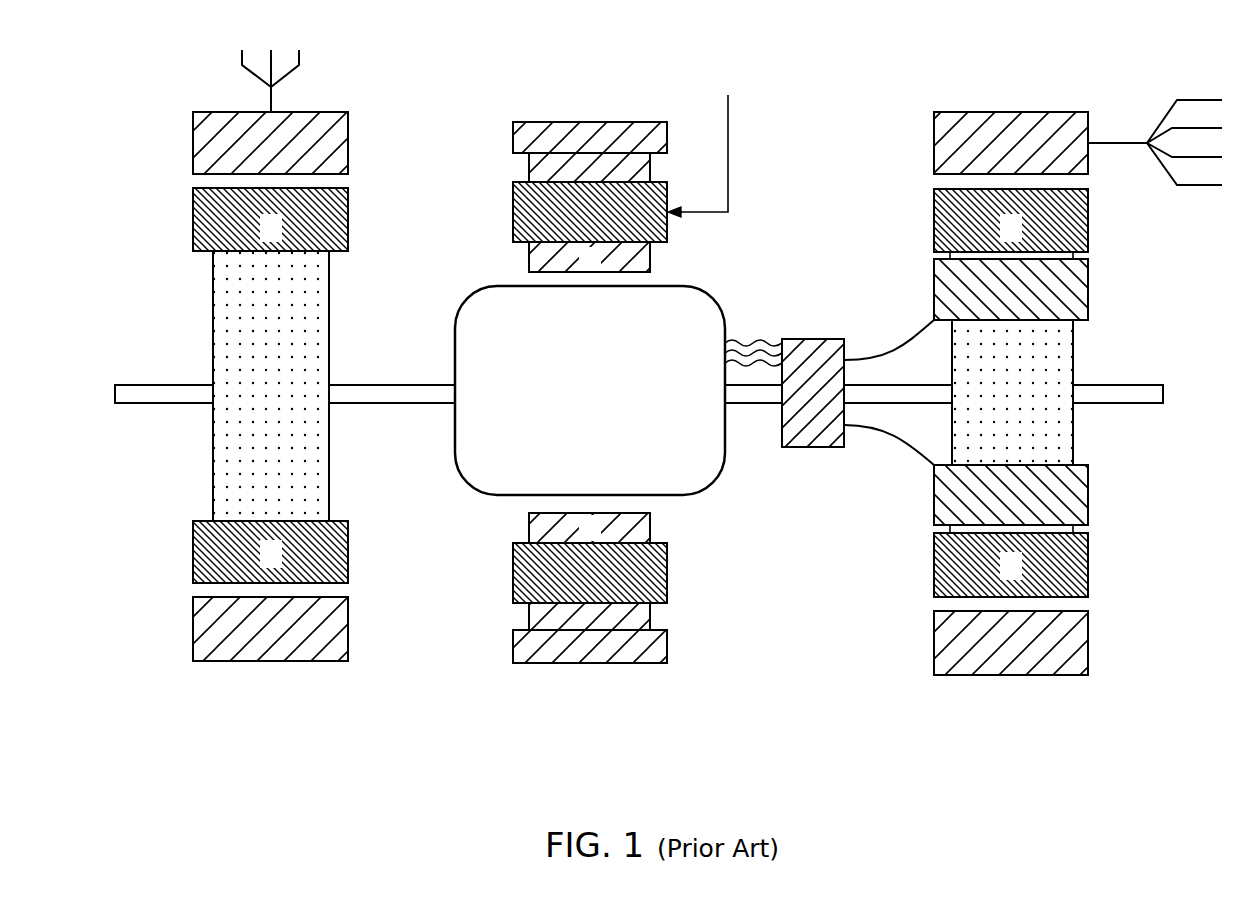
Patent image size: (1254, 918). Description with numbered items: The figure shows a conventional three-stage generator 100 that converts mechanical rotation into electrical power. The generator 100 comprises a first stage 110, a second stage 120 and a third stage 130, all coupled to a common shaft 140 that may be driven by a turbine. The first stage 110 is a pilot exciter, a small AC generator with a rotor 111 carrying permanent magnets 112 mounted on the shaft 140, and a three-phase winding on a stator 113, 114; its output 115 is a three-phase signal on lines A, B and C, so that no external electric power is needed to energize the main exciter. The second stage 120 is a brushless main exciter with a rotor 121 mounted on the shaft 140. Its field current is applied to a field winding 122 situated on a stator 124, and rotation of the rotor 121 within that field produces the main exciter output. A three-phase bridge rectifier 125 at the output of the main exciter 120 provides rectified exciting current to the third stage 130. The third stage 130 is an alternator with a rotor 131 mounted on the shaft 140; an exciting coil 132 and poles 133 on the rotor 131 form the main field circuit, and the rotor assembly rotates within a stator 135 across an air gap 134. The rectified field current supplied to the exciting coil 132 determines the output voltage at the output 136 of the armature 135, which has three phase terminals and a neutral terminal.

The generator 100 is at (158, 66).
The first stage 110 is at (260, 391).
The rotor 111 is at (330, 340).
The permanent magnets 112 is at (193, 548).
The stator 113 is at (223, 629).
The stator 114 is at (193, 145).
The output 115 is at (273, 100).
The second stage 120 is at (582, 405).
The rotor 121 is at (485, 286).
The field winding 122 is at (543, 588).
The stator 124 is at (582, 122).
The three-phase bridge rectifier 125 is at (808, 339).
The third stage 130 is at (1036, 418).
The rotor 131 is at (1075, 362).
The exciting coil 132 is at (1088, 495).
The poles 133 is at (1088, 222).
The air gap 134 is at (934, 604).
The stator 135 is at (1055, 636).
The output 136 is at (1110, 142).
The shaft 140 is at (150, 385).